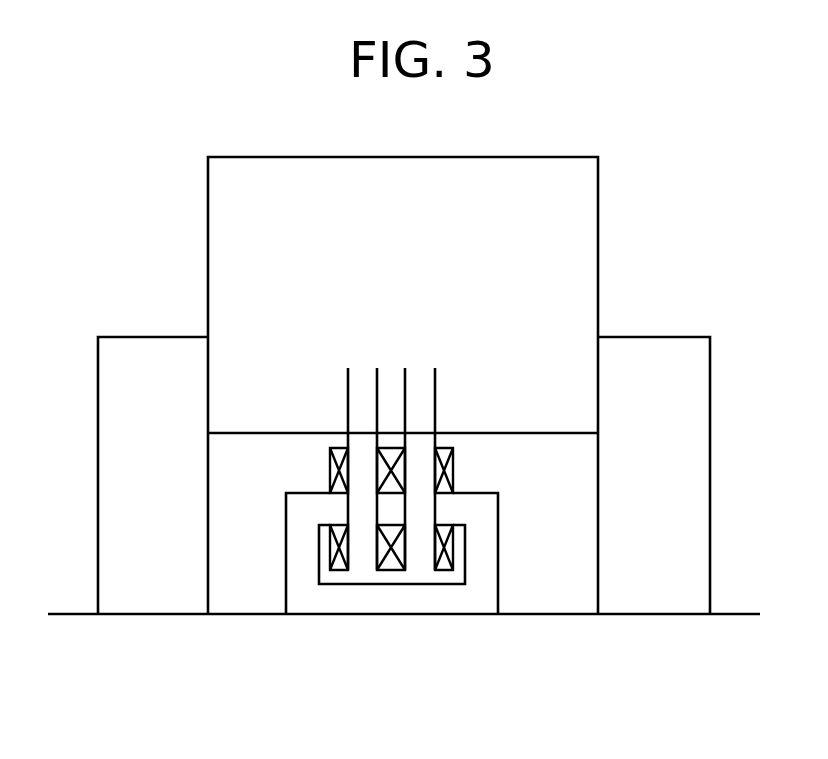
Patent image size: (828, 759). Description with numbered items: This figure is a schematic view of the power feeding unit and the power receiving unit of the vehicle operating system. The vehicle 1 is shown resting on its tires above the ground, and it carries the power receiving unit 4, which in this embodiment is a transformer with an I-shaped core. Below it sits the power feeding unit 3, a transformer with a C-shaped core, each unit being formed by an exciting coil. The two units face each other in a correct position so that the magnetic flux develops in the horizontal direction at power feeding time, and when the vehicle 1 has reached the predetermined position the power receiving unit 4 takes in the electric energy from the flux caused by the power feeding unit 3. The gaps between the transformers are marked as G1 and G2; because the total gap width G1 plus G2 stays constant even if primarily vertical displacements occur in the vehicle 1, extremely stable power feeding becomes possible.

The vehicle 1 is at (507, 182).
The power feeding unit 3 is at (462, 593).
The power receiving unit 4 is at (392, 509).
The gap width G1 is at (402, 387).
The gap width G2 is at (473, 410).